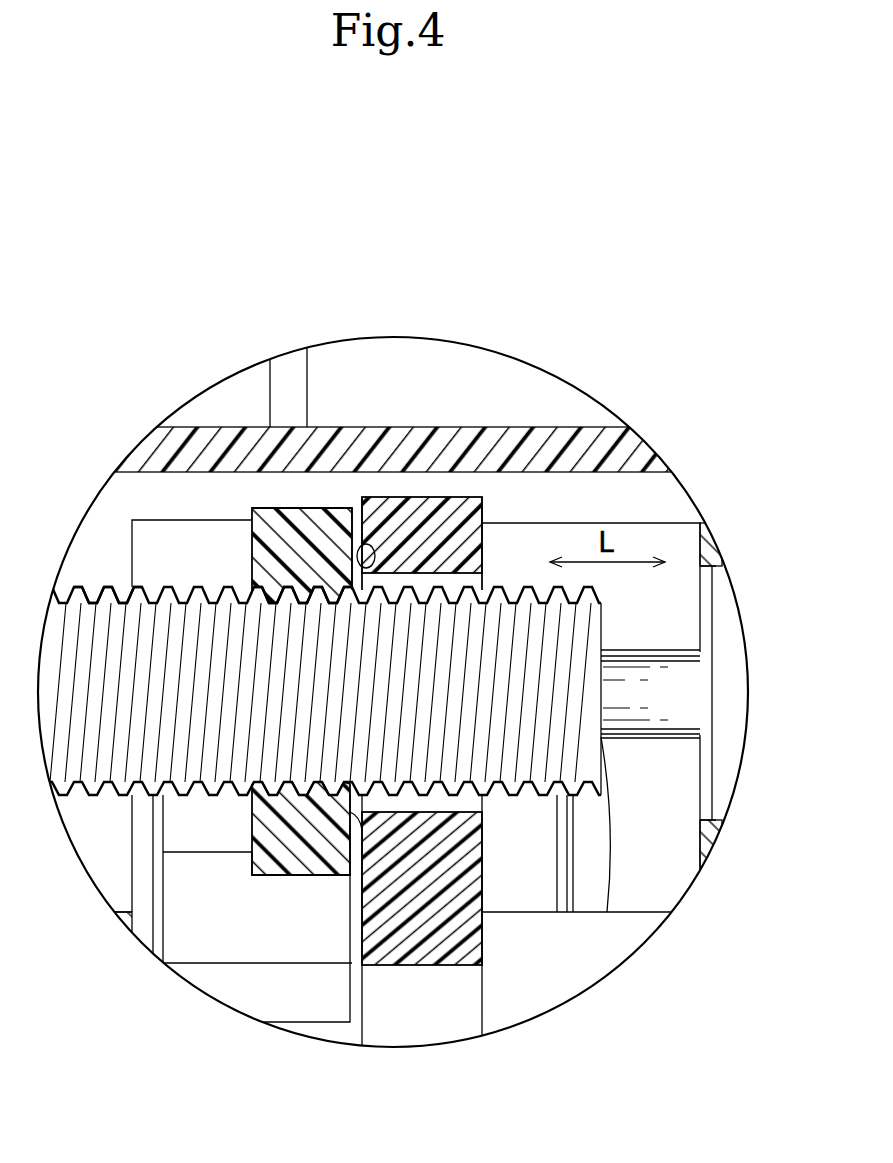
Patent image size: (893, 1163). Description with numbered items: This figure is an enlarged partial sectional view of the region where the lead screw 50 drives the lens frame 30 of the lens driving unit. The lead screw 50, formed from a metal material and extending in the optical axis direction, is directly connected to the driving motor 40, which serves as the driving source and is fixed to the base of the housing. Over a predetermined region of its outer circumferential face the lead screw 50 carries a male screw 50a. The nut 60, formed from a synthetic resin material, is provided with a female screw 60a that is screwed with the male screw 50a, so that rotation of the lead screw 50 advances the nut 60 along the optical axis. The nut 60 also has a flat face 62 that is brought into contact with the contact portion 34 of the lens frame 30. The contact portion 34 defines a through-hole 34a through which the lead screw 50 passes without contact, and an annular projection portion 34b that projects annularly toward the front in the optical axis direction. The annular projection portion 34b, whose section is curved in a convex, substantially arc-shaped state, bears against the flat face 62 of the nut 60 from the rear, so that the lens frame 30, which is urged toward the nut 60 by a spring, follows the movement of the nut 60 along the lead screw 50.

The lens frame 30 is at (483, 957).
The contact portion 34 is at (432, 497).
The through-hole 34a is at (482, 583).
The annular projection portion 34b is at (356, 575).
The driving motor 40 is at (728, 640).
The lead screw 50 is at (97, 798).
The male screw 50a is at (108, 592).
The nut 60 is at (277, 508).
The female screw 60a is at (263, 612).
The flat face 62 is at (357, 548).